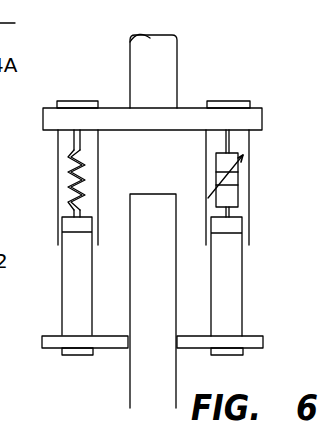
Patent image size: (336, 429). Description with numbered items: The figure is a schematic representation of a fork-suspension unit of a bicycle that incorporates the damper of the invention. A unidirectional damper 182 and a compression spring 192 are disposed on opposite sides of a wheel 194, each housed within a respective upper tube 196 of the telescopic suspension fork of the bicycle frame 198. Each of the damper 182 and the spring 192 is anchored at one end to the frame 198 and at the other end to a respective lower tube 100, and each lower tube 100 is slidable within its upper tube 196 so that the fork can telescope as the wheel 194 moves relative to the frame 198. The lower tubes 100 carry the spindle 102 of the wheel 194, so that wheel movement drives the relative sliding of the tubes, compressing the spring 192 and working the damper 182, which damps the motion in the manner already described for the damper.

The bicycle frame 198 is at (137, 66).
The upper tubes 196 is at (206, 153).
The compression spring 192 is at (68, 183).
The unidirectional damper 182 is at (229, 197).
The lower tube 100 is at (225, 296).
The wheel 194 is at (154, 199).
The spindle 102 is at (110, 346).